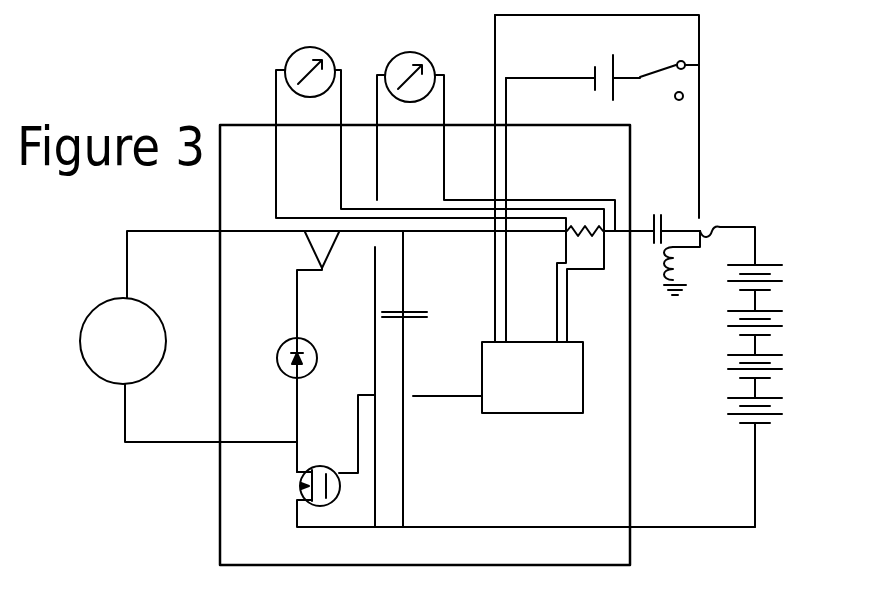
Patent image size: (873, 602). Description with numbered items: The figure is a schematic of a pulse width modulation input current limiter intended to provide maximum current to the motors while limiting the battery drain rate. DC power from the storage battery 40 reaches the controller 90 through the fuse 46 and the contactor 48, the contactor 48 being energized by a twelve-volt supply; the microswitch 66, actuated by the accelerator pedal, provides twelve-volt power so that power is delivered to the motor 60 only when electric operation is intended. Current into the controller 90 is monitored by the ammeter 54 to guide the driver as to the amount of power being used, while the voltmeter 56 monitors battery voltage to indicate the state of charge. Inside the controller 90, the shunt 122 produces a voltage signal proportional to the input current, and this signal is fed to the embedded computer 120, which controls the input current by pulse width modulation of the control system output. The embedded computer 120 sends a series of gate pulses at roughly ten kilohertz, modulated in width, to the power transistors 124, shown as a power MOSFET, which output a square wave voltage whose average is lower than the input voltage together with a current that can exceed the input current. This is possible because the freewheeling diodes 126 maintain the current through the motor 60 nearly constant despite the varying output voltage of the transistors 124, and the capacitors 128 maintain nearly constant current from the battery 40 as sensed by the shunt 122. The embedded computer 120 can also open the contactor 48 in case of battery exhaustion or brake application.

The storage battery 40 is at (755, 352).
The fuse 46 is at (722, 228).
The primary contactor 48 is at (668, 214).
The ammeter 54 is at (305, 48).
The voltmeter 56 is at (415, 52).
The motor 60 is at (323, 331).
The microswitch 66 is at (676, 63).
The controller 90 is at (425, 345).
The embedded computer 120 is at (498, 214).
The shunt 122 is at (578, 222).
The power transistors 124 is at (340, 497).
The freewheeling diodes 126 is at (285, 342).
The capacitors 128 is at (408, 310).